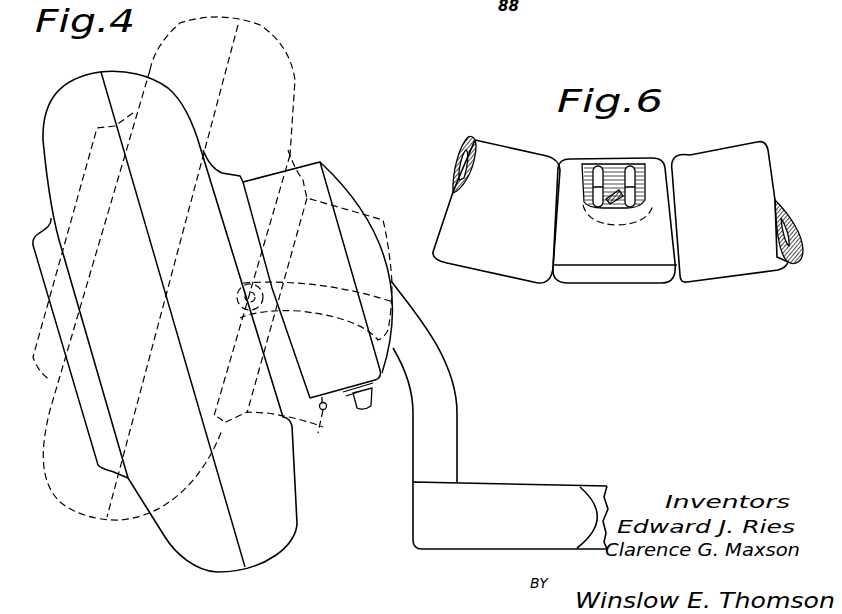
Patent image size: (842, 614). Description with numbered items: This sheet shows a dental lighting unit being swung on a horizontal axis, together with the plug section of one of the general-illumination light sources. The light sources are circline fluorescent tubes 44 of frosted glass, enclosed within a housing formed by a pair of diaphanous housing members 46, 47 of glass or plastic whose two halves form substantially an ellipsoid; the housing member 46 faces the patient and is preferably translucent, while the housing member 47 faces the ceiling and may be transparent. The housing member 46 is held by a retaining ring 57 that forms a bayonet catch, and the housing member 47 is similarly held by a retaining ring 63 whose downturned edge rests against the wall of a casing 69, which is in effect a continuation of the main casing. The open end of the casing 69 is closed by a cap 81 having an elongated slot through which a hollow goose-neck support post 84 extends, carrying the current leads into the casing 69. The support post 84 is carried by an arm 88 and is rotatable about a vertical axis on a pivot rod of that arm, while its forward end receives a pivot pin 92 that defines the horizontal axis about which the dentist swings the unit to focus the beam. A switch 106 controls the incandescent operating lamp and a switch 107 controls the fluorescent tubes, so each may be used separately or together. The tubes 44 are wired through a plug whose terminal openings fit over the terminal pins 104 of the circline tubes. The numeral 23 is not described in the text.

In FIG. 4, the support arm 23 is at (433, 348).
In FIG. 6, the circline fluorescent tube 44 is at (512, 158).
In FIG. 4, the housing member 46 is at (62, 108).
In FIG. 4, the housing member 47 is at (118, 83).
In FIG. 4, the retaining ring 57 is at (49, 218).
In FIG. 4, the retaining ring 63 is at (227, 175).
In FIG. 4, the casing 69 is at (318, 162).
In FIG. 4, the cap 81 is at (343, 188).
In FIG. 4, the support post 84 is at (412, 440).
In FIG. 4, the arm 88 is at (513, 490).
In FIG. 4, the pivot pin 92 is at (247, 307).
In FIG. 6, the terminal pin 104 is at (630, 164).
In FIG. 4, the switch 106 is at (340, 412).
In FIG. 4, the switch 107 is at (370, 408).